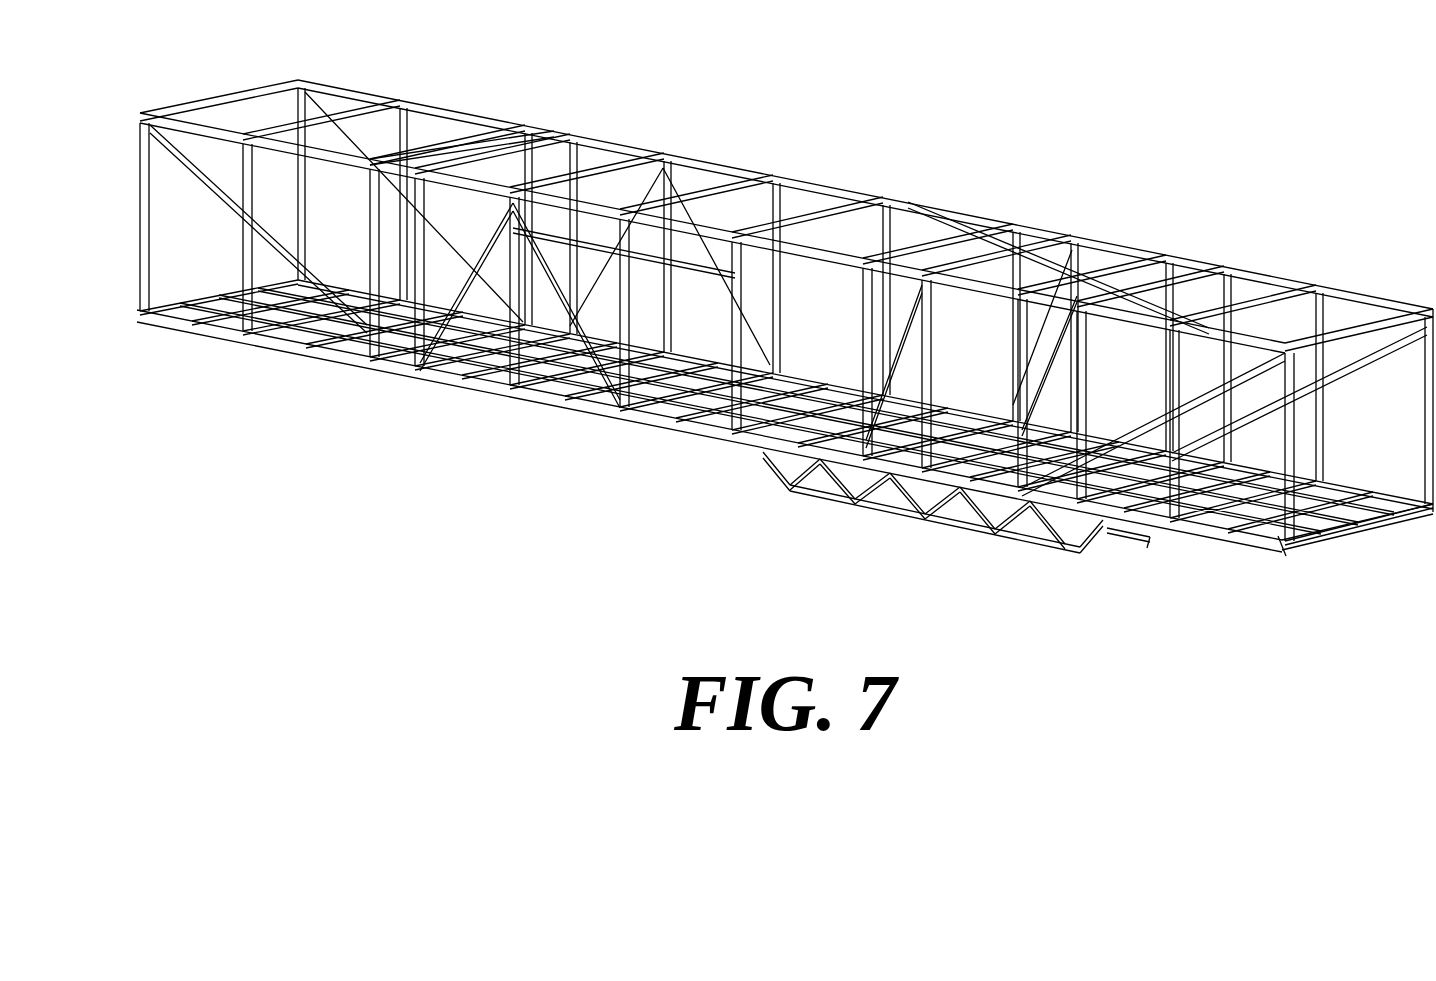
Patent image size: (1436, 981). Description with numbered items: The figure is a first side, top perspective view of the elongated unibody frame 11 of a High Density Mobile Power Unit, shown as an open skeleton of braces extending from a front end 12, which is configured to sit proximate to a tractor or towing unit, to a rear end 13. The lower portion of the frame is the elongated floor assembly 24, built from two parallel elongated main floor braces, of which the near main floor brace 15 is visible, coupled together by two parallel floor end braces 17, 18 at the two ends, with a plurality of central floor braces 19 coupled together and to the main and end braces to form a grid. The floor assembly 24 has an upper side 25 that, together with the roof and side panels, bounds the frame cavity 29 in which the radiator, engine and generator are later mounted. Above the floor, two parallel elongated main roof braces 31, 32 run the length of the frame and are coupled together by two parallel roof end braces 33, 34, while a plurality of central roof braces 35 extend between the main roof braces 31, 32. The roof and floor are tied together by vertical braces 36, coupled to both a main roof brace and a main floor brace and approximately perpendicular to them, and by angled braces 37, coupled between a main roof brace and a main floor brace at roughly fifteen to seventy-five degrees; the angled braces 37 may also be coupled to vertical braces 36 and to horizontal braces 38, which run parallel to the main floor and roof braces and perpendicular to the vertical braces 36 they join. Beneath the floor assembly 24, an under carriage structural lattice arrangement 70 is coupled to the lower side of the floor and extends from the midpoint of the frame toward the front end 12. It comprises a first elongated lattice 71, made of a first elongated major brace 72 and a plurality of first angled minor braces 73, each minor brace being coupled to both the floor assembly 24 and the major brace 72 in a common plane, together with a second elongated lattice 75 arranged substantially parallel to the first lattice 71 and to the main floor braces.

The unibody frame 11 is at (803, 158).
The front end 12 is at (1399, 557).
The rear end 13 is at (200, 82).
The main floor brace 15 is at (604, 410).
The floor end brace 17 is at (1332, 538).
The floor end brace 18 is at (180, 296).
The central floor braces 19 is at (478, 363).
The floor assembly 24 is at (1281, 545).
The upper side 25 is at (1057, 450).
The frame cavity 29 is at (1140, 297).
The main roof brace 31 is at (956, 290).
The main roof brace 32 is at (983, 228).
The roof end brace 33 is at (1347, 336).
The roof end brace 34 is at (252, 97).
The central roof braces 35 is at (497, 135).
The vertical braces 36 is at (137, 152).
The angled braces 37 is at (323, 285).
The horizontal braces 38 is at (700, 276).
The under carriage structural lattice arrangement 70 is at (1112, 539).
The first elongated lattice 71 is at (1083, 547).
The first elongated major brace 72 is at (910, 505).
The first angled minor braces 73 is at (773, 463).
The second elongated lattice 75 is at (1150, 536).